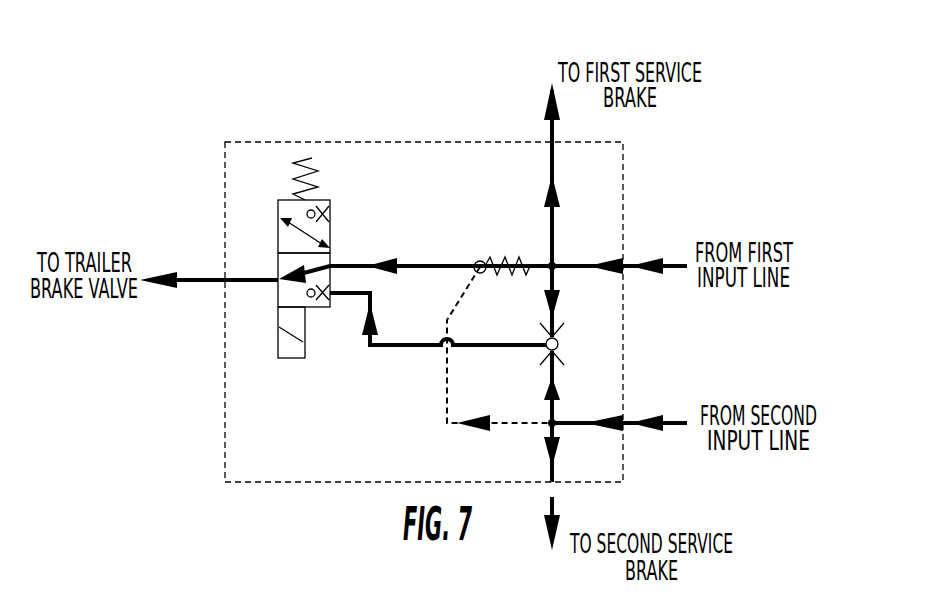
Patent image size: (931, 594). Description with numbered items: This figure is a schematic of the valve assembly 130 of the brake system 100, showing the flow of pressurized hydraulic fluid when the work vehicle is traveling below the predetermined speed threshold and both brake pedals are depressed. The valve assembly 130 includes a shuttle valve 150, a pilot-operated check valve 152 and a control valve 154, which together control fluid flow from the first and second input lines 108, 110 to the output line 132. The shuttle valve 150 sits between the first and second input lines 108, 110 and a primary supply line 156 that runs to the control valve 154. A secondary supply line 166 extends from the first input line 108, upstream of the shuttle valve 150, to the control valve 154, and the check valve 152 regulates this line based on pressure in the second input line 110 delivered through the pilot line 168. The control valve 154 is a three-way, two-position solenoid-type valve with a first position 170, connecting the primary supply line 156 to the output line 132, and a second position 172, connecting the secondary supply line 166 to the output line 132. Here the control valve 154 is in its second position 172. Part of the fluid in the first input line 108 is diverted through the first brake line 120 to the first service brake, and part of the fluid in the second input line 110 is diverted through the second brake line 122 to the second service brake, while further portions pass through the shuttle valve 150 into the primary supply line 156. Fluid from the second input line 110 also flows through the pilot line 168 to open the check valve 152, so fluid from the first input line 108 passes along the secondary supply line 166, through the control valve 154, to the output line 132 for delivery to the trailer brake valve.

The brake system 100 is at (164, 135).
The valve assembly 130 is at (302, 134).
The control valve 154 is at (244, 219).
The first position 170 is at (322, 226).
The second position 172 is at (290, 294).
The output line 132 is at (238, 278).
The secondary supply line 166 is at (458, 264).
The pilot-operated check valve 152 is at (521, 264).
The first brake line 120 is at (552, 160).
The first input line 108 is at (620, 262).
The shuttle valve 150 is at (562, 343).
The second brake line 122 is at (552, 480).
The second input line 110 is at (620, 420).
The primary supply line 156 is at (380, 347).
The pilot line 168 is at (450, 393).